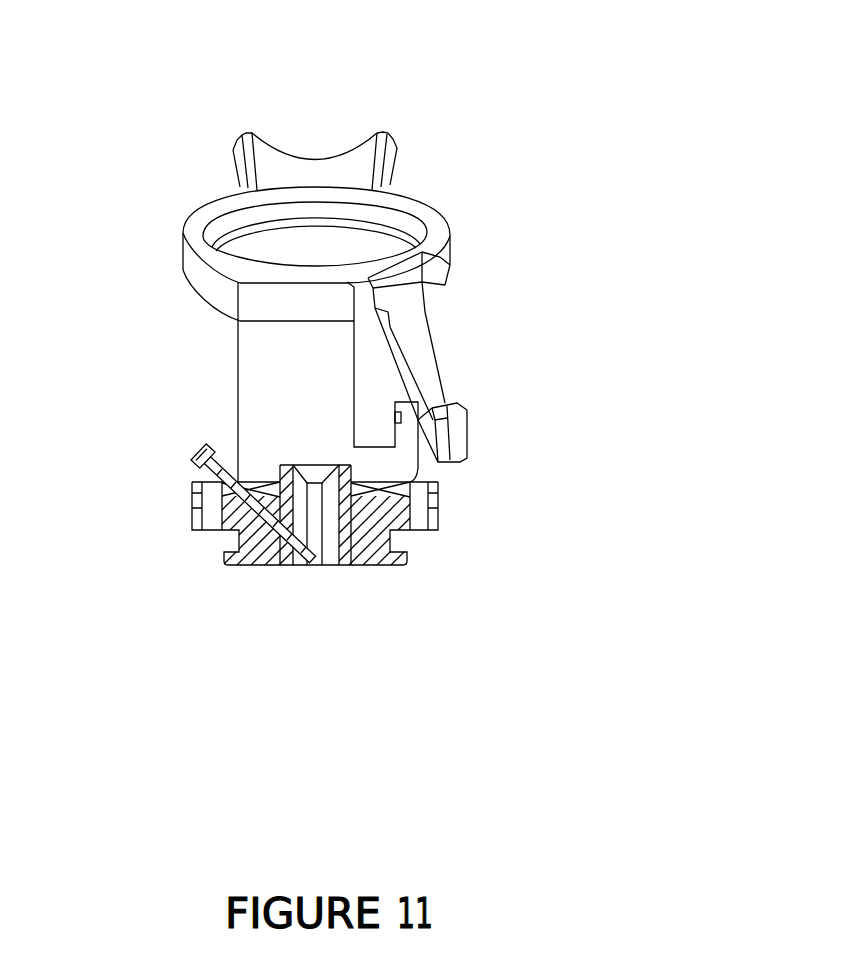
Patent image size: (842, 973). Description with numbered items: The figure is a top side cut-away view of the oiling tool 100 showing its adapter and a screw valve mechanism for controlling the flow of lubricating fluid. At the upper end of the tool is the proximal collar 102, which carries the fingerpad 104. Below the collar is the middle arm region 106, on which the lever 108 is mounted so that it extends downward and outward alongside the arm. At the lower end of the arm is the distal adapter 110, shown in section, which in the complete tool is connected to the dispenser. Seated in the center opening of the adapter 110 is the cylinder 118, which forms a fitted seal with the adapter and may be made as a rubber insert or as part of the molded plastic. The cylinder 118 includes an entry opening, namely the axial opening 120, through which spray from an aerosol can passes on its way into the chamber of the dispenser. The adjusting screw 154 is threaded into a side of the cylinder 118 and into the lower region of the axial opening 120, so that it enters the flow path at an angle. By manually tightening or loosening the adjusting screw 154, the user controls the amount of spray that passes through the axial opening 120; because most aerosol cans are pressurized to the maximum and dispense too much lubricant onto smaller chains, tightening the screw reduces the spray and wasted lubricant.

The oiling tool 100 is at (120, 56).
The proximal collar 102 is at (456, 229).
The fingerpad 104 is at (406, 133).
The middle arm region 106 is at (232, 342).
The lever 108 is at (449, 361).
The distal adapter 110 is at (177, 509).
The cylinder 118 is at (331, 523).
The axial opening 120 is at (313, 463).
The adjusting screw 154 is at (177, 448).